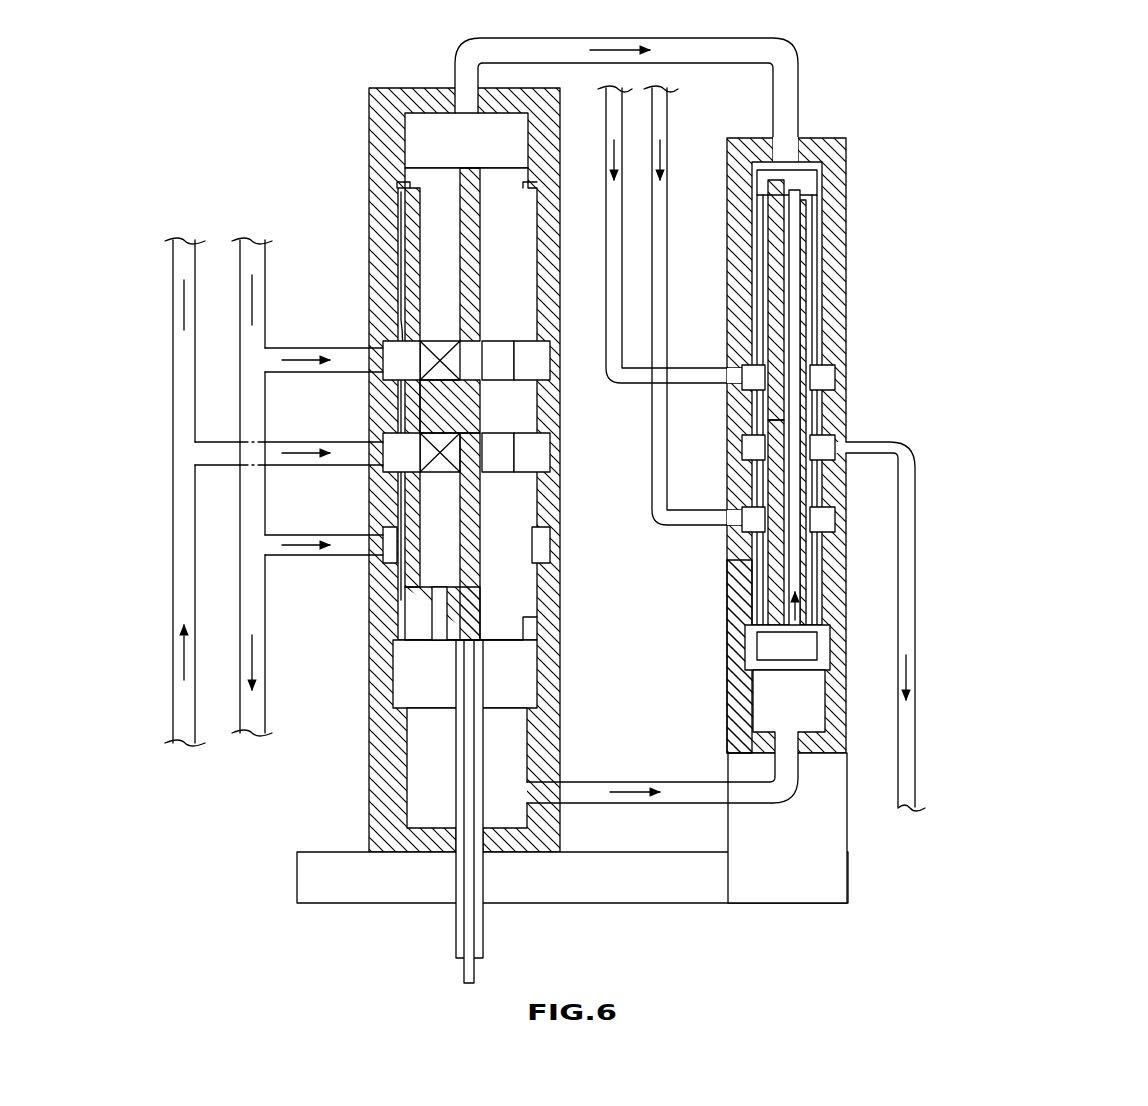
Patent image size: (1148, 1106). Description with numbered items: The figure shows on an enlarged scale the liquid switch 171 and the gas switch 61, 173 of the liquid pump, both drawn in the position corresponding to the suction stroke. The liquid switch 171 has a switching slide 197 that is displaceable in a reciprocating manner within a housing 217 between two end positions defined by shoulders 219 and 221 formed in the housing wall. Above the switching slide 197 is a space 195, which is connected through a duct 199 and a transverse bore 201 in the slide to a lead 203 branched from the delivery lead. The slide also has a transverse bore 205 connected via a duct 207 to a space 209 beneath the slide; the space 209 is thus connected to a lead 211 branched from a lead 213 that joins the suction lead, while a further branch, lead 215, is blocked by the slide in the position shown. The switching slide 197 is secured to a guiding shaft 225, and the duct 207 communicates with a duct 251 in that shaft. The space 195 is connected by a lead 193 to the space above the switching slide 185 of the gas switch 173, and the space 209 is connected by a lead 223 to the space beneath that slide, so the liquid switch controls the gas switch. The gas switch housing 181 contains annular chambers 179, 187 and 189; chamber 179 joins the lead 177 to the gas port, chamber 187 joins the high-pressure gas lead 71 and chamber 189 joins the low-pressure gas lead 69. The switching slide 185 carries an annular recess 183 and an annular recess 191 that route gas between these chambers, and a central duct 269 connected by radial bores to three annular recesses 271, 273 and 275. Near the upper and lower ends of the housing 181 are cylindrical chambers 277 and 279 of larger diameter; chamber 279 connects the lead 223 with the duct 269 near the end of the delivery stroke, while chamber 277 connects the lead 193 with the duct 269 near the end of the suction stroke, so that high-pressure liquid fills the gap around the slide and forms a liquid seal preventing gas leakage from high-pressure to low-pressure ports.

The lead 193 is at (588, 48).
The space 195 is at (415, 125).
The shoulder 219 is at (398, 182).
The lead 213 is at (257, 465).
The liquid switch 171 is at (372, 248).
The transverse bore 201 is at (400, 300).
The lead 215 is at (320, 347).
The duct 199 is at (450, 228).
The high-pressure gas lead 71 is at (612, 231).
The low-pressure gas lead 69 is at (661, 231).
The annular recess 271 is at (758, 190).
The cylindrical chamber 277 is at (825, 240).
The gas switch 61 is at (829, 445).
The gas switch 173 is at (915, 277).
The transverse bore 205 is at (402, 418).
The switching slide 197 is at (508, 405).
The duct 269 is at (775, 310).
The annular recess 183 is at (823, 325).
The annular chamber 187 is at (822, 372).
The annular recess 273 is at (760, 408).
The annular chamber 179 is at (825, 420).
The lead 203 is at (292, 467).
The duct 207 is at (448, 508).
The annular recess 191 is at (755, 484).
The annular chamber 189 is at (820, 518).
The lead 211 is at (296, 558).
The switching slide 185 is at (770, 548).
The housing 181 is at (740, 596).
The lead 177 is at (910, 603).
The housing 217 is at (548, 625).
The annular recess 275 is at (748, 634).
The cylindrical chamber 279 is at (822, 658).
The space 209 is at (410, 683).
The shoulder 221 is at (537, 716).
The guiding shaft 225 is at (458, 738).
The duct 251 is at (468, 789).
The lead 223 is at (670, 790).